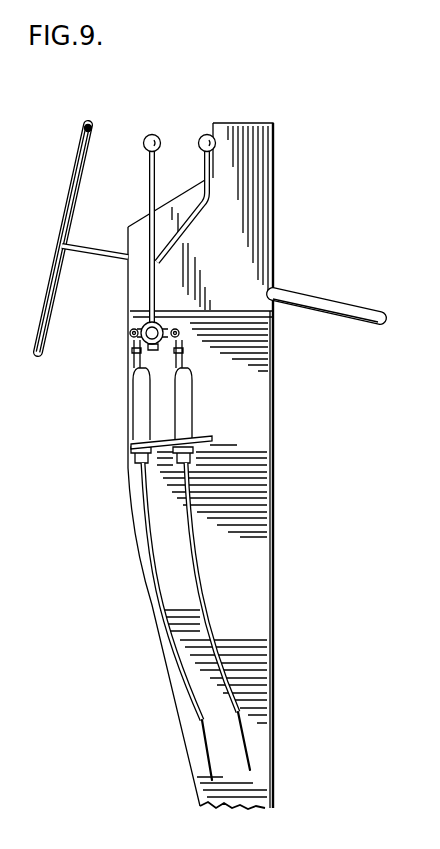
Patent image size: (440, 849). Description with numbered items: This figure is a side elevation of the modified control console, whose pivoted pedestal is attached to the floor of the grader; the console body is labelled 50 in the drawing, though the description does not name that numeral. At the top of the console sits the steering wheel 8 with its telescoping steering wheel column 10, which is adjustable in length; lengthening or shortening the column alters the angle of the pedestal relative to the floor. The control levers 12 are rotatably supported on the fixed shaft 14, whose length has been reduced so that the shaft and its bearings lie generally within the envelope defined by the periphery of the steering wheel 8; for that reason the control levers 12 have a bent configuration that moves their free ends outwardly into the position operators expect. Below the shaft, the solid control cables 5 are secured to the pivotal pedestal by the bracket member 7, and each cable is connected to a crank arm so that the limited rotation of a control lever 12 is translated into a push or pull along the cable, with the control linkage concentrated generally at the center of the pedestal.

The frame housing 50 is at (237, 537).
The control lever 12 is at (158, 163).
The steering wheel 8 is at (89, 124).
The telescoping steering wheel column 10 is at (313, 293).
The fixed shaft 14 is at (148, 335).
The bracket member 7 is at (132, 446).
The control cable 5 is at (157, 567).